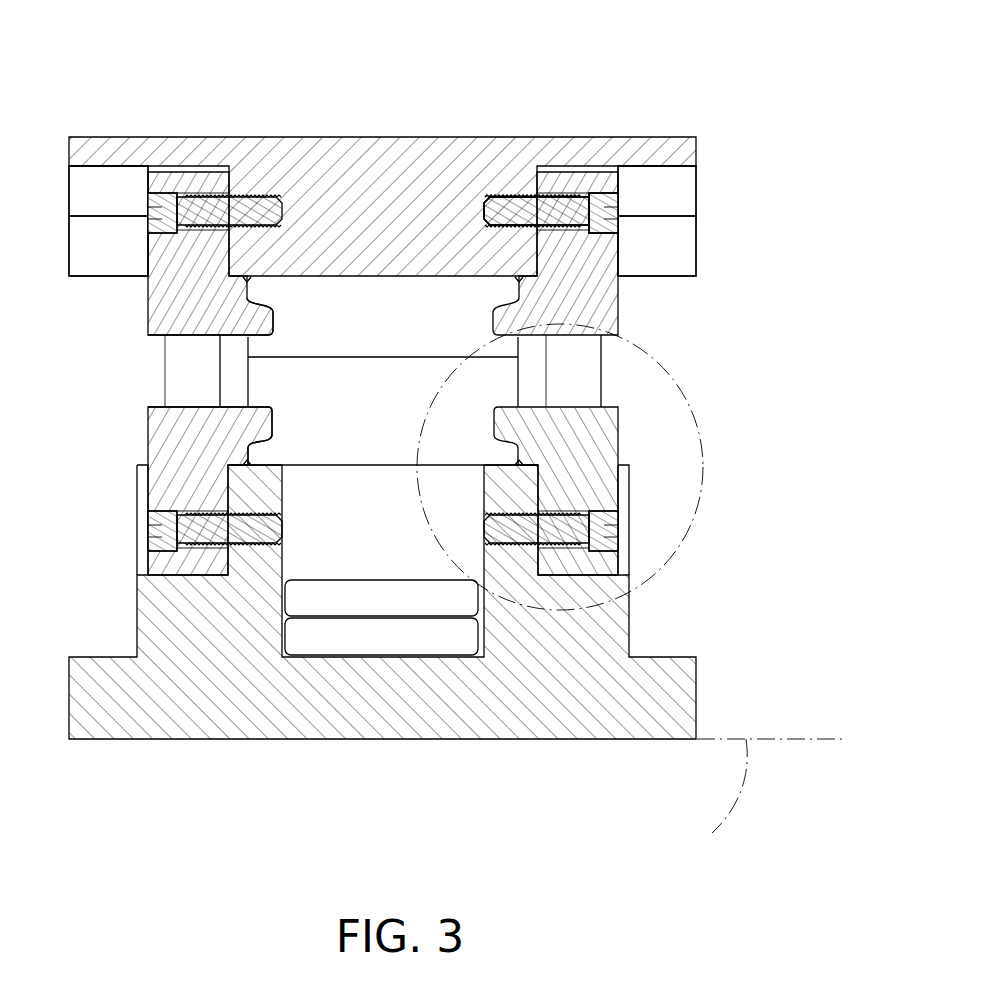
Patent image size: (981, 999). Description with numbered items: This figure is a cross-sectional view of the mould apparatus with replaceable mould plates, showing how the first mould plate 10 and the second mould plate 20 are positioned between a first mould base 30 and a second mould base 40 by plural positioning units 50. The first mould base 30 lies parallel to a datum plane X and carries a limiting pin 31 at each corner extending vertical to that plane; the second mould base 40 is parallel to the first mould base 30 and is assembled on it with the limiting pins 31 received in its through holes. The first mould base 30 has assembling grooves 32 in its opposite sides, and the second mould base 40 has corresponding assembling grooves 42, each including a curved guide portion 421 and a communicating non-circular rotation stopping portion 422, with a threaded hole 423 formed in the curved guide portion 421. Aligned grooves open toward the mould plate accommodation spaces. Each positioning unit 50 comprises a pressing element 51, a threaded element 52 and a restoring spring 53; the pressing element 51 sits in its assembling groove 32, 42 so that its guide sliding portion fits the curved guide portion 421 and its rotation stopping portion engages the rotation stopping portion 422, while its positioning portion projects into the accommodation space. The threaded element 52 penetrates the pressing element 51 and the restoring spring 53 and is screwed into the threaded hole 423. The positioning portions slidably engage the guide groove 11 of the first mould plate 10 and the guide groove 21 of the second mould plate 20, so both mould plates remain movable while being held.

The first mould plate 10 is at (247, 453).
The guide groove 11 is at (267, 417).
The second mould plate 20 is at (245, 288).
The guide groove 21 is at (270, 320).
The first mould base 30 is at (205, 741).
The limiting pin 31 is at (173, 393).
The assembling groove 32 is at (622, 538).
The second mould base 40 is at (275, 137).
The assembling groove 42 is at (808, 168).
The curved guide portion 421 is at (673, 194).
The rotation stopping portion 422 is at (676, 247).
The threaded hole 423 is at (483, 200).
The positioning unit 50 is at (618, 435).
The pressing element 51 is at (560, 183).
The threaded element 52 is at (515, 215).
The restoring spring 53 is at (550, 196).
The datum plane X is at (767, 801).